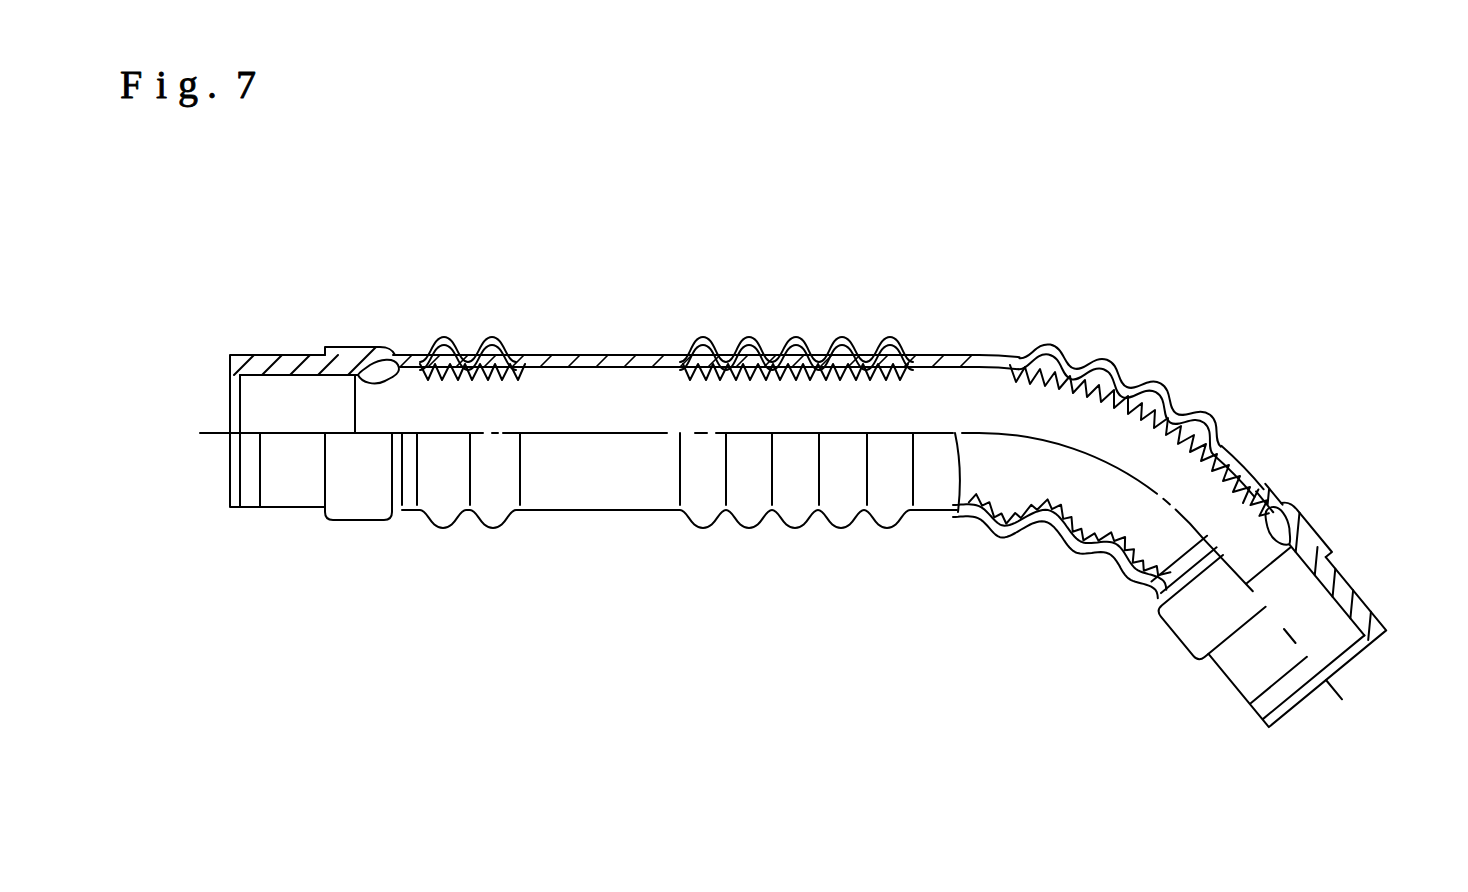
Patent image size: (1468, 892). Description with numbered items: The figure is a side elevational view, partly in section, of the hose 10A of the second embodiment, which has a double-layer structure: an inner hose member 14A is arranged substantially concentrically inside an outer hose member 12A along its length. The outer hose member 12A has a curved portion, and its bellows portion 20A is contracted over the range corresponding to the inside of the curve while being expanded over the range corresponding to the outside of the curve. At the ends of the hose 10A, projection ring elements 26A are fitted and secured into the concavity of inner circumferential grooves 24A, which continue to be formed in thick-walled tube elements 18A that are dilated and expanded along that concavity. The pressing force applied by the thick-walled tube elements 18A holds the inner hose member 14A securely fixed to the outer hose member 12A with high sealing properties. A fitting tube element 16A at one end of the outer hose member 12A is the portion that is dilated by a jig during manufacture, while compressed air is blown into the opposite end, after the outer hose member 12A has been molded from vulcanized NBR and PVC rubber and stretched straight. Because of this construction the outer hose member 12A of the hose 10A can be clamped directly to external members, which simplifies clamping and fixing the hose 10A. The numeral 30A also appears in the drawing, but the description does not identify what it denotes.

The hose 10A is at (891, 236).
The outer hose member 12A is at (595, 356).
The inner hose member 14A is at (488, 374).
The fitting tube element 16A is at (268, 354).
The thick-walled tube element 18A is at (345, 346).
The bellows portion 20A is at (1045, 538).
The inner circumferential groove 24A is at (373, 356).
The projection ring element 26A is at (365, 378).
The helical reinforcing wire 30A is at (1030, 468).